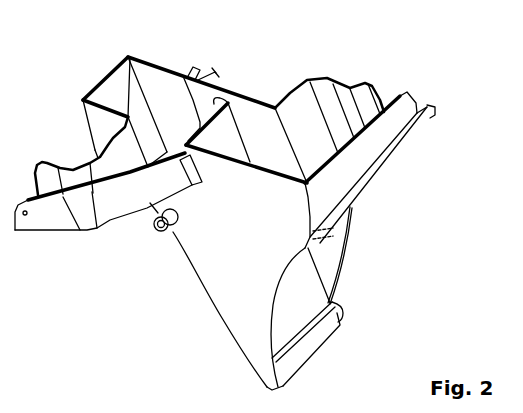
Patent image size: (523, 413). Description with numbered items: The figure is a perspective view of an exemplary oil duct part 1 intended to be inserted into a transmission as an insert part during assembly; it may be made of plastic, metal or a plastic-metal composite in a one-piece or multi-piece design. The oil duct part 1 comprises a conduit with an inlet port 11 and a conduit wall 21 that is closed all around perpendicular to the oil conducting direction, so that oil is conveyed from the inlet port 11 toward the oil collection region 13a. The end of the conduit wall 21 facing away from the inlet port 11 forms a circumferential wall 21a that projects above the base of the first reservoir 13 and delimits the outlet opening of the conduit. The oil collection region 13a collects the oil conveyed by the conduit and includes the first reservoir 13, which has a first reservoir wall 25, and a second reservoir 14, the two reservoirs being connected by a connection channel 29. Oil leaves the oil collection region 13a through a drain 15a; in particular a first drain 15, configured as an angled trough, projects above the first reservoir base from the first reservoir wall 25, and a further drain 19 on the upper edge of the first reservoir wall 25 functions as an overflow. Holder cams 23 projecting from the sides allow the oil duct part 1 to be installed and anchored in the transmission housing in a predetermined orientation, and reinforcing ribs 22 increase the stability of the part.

The oil duct part 1 is at (225, 205).
The inlet port 11 is at (313, 344).
The first reservoir 13 is at (176, 99).
The oil collection region 13a is at (118, 74).
The second reservoir 14 is at (298, 104).
The first drain 15 is at (108, 194).
The drain 15a is at (101, 228).
The further drain 19 is at (204, 76).
The conduit wall 21 is at (310, 289).
The circumferential wall 21a is at (187, 78).
The reinforcing ribs 22 is at (338, 243).
The holder cams 23 is at (157, 238).
The first reservoir wall 25 is at (100, 80).
The connection channel 29 is at (229, 101).